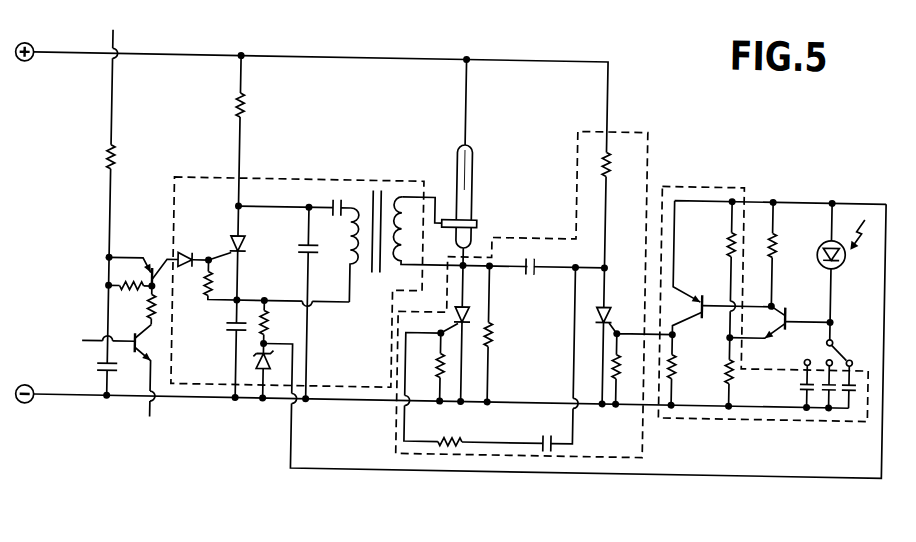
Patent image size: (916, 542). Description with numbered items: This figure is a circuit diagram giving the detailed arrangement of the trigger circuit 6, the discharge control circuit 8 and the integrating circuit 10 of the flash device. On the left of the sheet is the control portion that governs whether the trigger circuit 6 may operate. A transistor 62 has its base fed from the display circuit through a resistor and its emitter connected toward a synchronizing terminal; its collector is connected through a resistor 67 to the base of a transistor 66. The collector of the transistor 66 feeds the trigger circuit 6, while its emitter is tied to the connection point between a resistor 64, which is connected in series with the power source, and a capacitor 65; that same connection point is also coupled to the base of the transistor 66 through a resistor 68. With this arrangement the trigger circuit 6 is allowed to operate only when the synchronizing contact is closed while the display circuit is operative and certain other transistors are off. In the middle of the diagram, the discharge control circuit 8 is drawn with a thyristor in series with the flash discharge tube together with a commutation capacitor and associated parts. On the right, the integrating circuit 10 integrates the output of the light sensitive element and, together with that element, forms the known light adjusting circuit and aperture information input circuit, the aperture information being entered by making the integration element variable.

The resistor 64 is at (107, 164).
The transistor 66 is at (150, 274).
The resistor 68 is at (120, 288).
The resistor 67 is at (144, 314).
The transistor 62 is at (126, 344).
The capacitor 65 is at (99, 371).
The trigger circuit 6 is at (307, 185).
The discharge control circuit 8 is at (526, 236).
The integrating circuit 10 is at (687, 183).